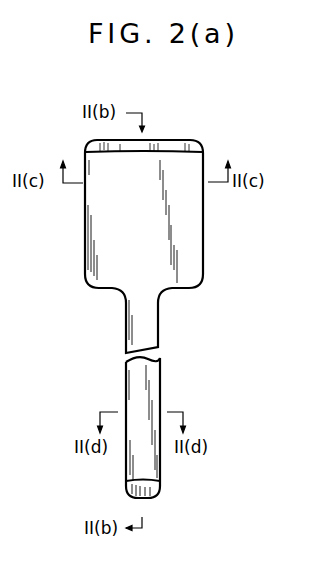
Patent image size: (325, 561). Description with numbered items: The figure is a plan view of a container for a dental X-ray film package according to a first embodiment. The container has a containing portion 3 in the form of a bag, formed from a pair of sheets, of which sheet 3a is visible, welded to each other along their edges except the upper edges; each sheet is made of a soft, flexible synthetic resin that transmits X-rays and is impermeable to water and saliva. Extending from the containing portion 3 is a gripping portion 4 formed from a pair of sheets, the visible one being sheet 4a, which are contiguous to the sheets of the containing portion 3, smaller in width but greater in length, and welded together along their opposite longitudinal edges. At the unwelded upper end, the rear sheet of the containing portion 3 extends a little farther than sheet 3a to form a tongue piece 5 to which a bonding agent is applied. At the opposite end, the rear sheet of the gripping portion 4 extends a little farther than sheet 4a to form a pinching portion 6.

The containing portion 3 is at (72, 260).
The sheet 3a is at (200, 247).
The gripping portion 4 is at (116, 374).
The sheet 4a is at (160, 377).
The tongue piece 5 is at (180, 143).
The pinching portion 6 is at (124, 484).